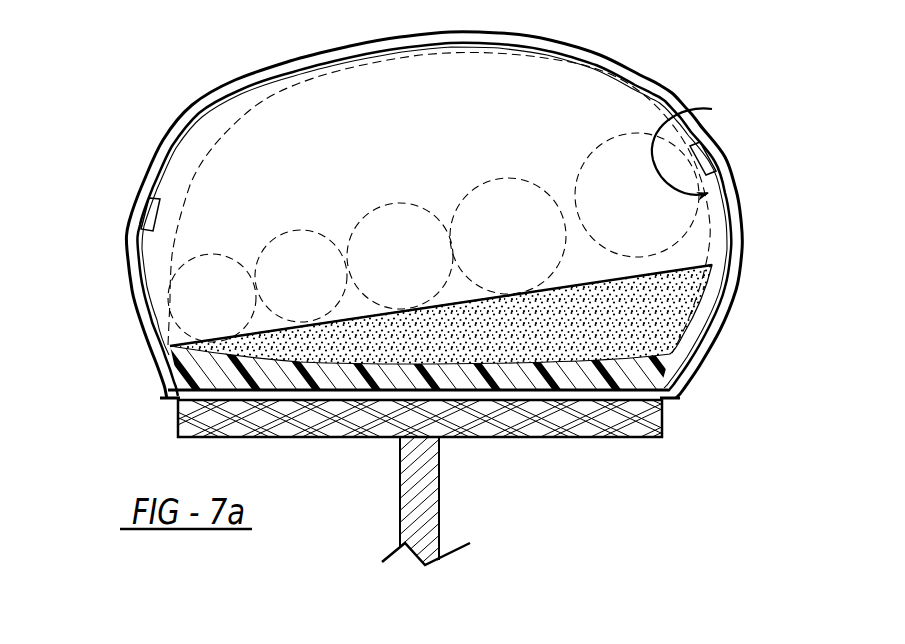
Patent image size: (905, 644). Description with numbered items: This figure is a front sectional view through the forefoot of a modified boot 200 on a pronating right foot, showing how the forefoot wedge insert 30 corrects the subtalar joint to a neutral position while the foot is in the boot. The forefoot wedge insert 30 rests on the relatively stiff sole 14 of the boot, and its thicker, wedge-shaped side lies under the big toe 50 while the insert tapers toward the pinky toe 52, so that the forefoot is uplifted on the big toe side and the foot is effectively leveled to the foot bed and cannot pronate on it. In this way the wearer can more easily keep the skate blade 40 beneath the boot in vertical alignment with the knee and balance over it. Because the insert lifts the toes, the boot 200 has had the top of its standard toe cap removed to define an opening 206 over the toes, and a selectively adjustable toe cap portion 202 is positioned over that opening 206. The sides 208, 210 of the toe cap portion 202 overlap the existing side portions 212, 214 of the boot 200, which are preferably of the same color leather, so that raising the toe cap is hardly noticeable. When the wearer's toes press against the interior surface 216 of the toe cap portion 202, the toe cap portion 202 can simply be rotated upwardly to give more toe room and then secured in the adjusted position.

The modified boot 200 is at (429, 306).
The toe cap portion 202 is at (680, 75).
The opening 206 is at (515, 70).
The side of the toe cap portion 208 is at (118, 312).
The side of the toe cap portion 210 is at (745, 235).
The side portion of the boot 212 is at (146, 228).
The side portion of the boot 214 is at (714, 173).
The interior surface of the toe cap portion 216 is at (712, 109).
The big toe 50 is at (561, 146).
The pinky toe 52 is at (234, 220).
The forefoot wedge insert 30 is at (674, 303).
The sole 14 is at (619, 458).
The skate blade 40 is at (440, 510).